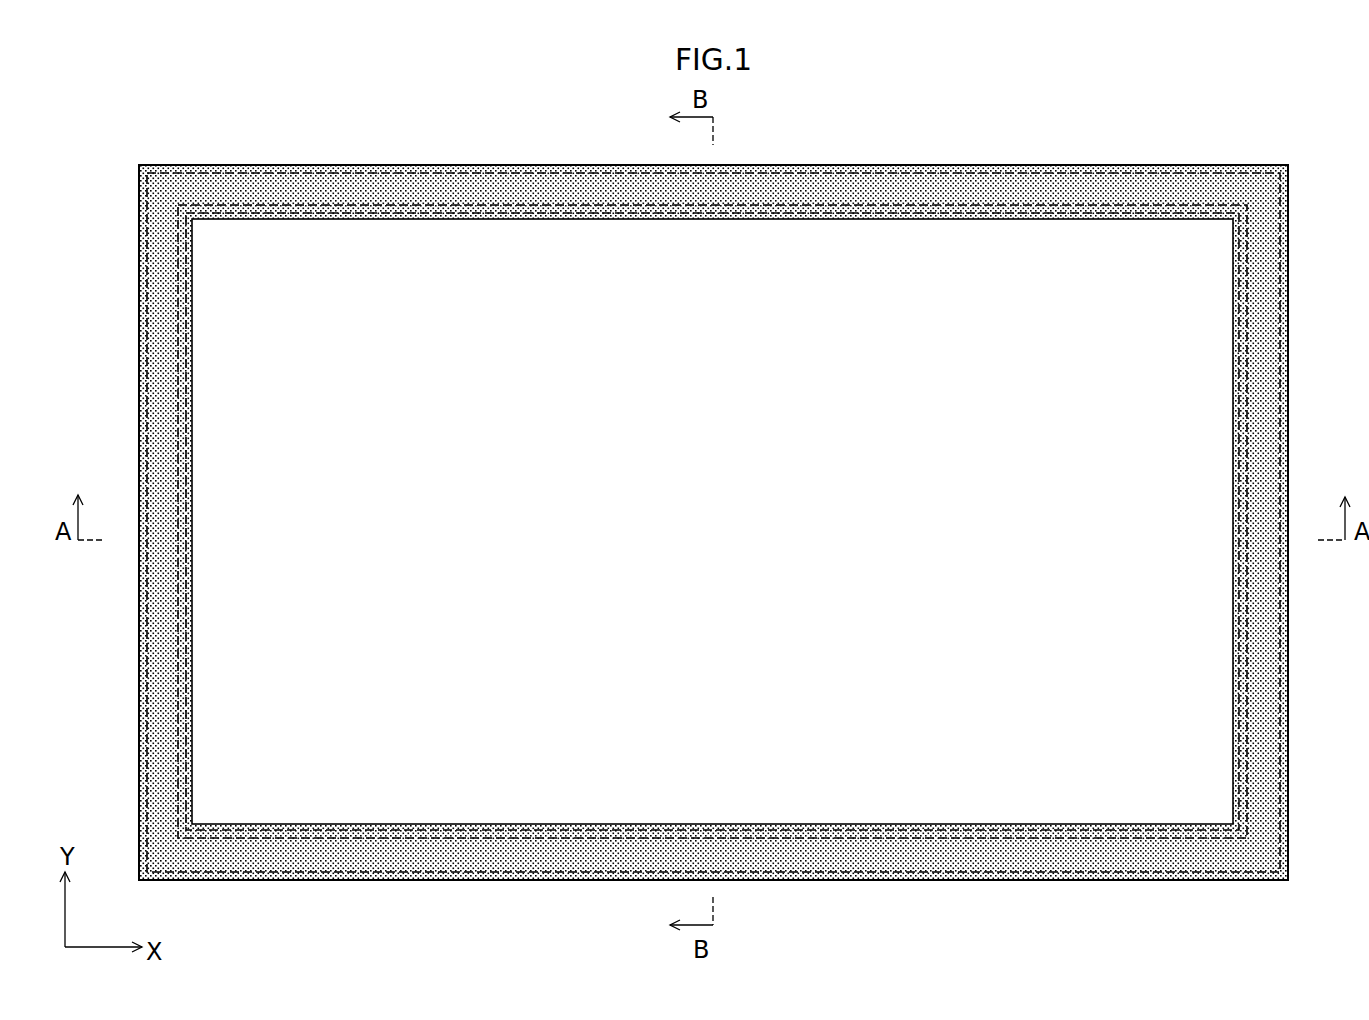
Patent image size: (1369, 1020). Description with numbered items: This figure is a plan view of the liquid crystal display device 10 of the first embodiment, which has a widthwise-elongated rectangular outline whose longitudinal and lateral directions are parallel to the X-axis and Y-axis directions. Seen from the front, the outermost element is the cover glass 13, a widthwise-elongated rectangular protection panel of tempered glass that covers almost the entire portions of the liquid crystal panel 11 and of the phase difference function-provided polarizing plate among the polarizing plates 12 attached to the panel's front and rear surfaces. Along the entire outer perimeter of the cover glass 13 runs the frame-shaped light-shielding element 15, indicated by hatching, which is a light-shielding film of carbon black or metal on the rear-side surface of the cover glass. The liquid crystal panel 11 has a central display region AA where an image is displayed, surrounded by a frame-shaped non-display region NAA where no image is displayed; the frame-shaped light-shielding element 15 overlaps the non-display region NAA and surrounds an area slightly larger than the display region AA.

The liquid crystal display device 10 is at (661, 479).
The liquid crystal panel 11 is at (810, 173).
The polarizing plates 12 is at (910, 205).
The cover glass 13 is at (536, 165).
The frame-shaped light-shielding element 15 is at (1101, 195).
The display region AA is at (300, 219).
The non-display region NAA is at (168, 322).